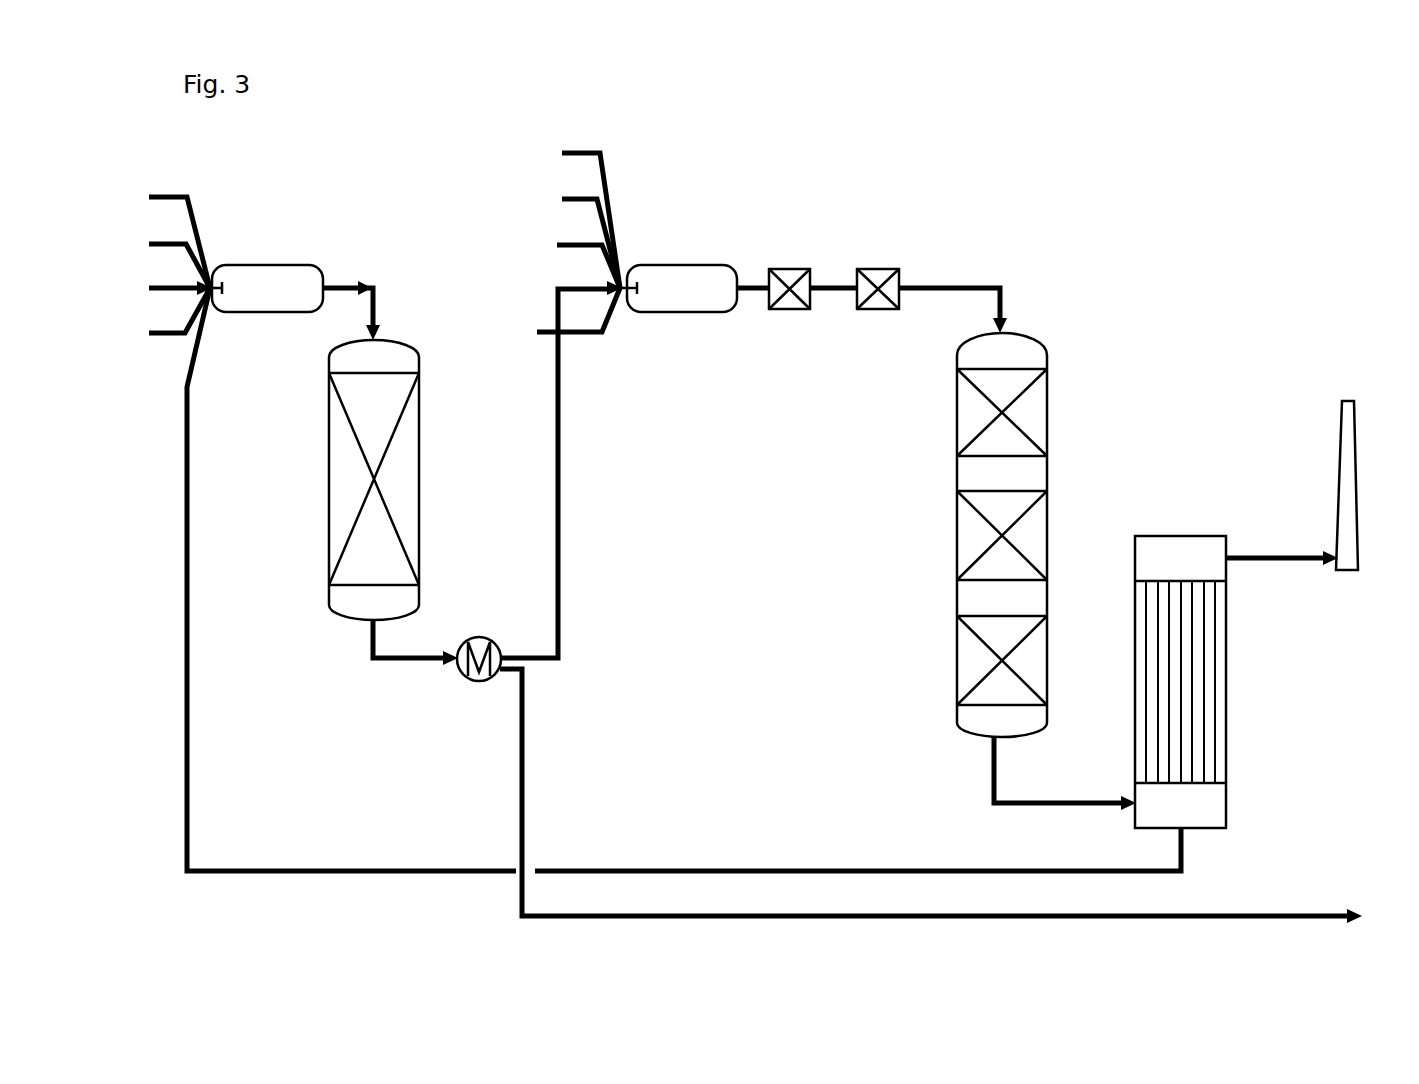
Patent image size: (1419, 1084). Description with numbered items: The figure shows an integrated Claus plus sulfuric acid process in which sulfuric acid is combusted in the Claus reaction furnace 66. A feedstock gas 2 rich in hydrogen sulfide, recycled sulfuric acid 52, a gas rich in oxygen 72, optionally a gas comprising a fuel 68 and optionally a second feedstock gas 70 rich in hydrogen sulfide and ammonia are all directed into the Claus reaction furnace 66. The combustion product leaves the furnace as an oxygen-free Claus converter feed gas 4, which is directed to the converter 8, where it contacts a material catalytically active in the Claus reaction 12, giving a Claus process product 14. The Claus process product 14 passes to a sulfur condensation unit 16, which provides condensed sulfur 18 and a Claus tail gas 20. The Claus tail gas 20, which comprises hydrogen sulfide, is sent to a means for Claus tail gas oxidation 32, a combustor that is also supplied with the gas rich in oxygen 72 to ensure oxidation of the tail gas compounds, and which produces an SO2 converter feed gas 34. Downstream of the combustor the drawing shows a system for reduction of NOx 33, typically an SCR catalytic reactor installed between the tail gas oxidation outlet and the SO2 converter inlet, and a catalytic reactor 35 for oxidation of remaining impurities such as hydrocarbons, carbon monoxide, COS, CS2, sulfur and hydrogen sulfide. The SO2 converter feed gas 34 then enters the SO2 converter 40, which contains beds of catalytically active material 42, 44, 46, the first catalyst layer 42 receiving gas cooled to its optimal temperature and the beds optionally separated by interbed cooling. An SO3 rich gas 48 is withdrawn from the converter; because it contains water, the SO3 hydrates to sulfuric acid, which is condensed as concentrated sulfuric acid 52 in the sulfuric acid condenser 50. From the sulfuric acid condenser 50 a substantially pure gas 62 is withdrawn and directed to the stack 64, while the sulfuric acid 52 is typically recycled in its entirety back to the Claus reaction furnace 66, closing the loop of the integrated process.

The feedstock gas 2 is at (182, 287).
The O2 free Claus converter feed gas 4 is at (381, 305).
The converter 8 is at (434, 338).
The material catalytically active in the Claus reaction 12 is at (424, 535).
The Claus process product 14 is at (369, 650).
The sulfur condensation unit 16 is at (485, 637).
The condensed sulfur 18 is at (543, 742).
The Claus tail gas 20 is at (534, 653).
The means for Claus tail gas oxidation 32 is at (676, 266).
The system for reduction of NOx 33 is at (795, 269).
The SO2 converter feed gas 34 is at (983, 286).
The catalytic reactor 35 is at (885, 269).
The SO2 converter 40 is at (1048, 344).
The first catalyst layer 42 is at (1048, 416).
The bed of catalytically active material 44 is at (1048, 521).
The bed of catalytically active material 46 is at (1048, 659).
The SO3 rich gas 48 is at (1070, 799).
The sulfuric acid condenser 50 is at (1229, 669).
The sulfuric acid 52 is at (1185, 859).
The substantially pure gas 62 is at (1270, 557).
The stack 64 is at (1340, 441).
The Claus reaction furnace 66 is at (254, 264).
The gas comprising a fuel 68 is at (187, 244).
The second feedstock gas 70 is at (188, 198).
The gas rich in oxygen 72 is at (595, 324).